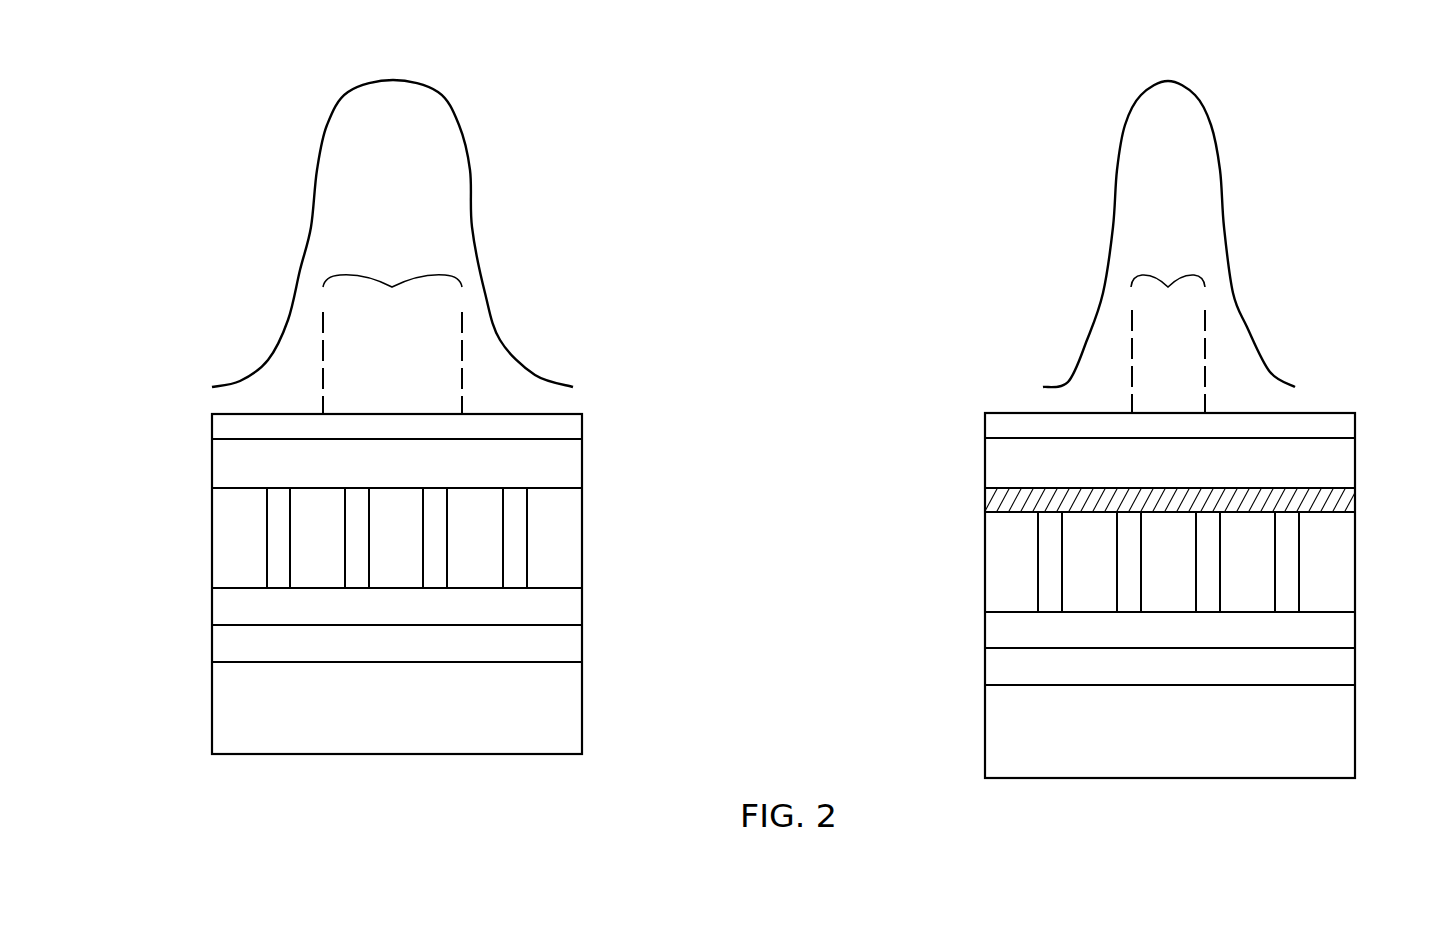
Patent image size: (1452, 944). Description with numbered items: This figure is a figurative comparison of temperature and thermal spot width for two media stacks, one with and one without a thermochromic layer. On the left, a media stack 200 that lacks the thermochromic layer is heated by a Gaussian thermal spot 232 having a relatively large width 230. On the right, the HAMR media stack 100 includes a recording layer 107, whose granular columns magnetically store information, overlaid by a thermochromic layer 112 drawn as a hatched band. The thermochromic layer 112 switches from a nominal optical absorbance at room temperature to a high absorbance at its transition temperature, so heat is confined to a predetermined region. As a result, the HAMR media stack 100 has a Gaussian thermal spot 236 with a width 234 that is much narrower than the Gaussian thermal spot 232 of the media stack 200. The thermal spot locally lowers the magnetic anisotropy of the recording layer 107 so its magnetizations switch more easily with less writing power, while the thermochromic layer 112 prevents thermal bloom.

The media stack 200 is at (174, 417).
The Gaussian thermal spot 232 is at (340, 107).
The width of Gaussian thermal spot 230 is at (393, 270).
The HAMR media stack 100 is at (947, 417).
The Gaussian thermal spot 236 is at (1128, 108).
The width of Gaussian thermal spot 234 is at (1168, 269).
The recording layer 107 is at (967, 513).
The thermochromic layer 112 is at (1340, 497).